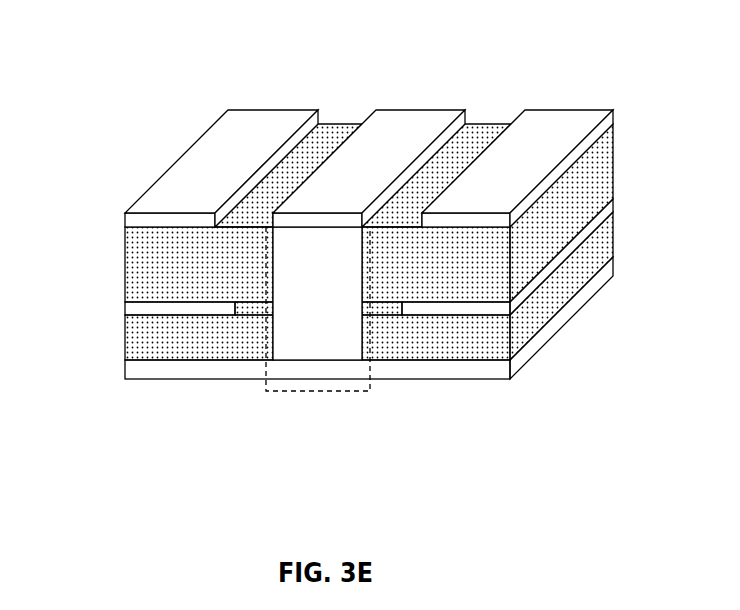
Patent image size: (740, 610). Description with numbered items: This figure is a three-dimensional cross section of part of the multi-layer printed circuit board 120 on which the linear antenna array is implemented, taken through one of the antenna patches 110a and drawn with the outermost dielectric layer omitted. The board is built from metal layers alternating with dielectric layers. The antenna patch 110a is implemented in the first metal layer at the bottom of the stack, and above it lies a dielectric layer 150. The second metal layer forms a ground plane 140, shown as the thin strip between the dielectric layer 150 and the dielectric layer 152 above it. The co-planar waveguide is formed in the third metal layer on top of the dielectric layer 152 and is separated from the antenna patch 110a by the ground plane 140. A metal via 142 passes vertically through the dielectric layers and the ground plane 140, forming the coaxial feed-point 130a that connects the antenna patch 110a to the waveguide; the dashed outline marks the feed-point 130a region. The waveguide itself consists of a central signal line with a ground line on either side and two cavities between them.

The multi-layer printed circuit board 120 is at (320, 280).
The antenna patch 110a is at (428, 380).
The dielectric layer 150 is at (125, 345).
The ground plane 140 is at (447, 313).
The dielectric layer 152 is at (125, 247).
The metal via 142 is at (295, 287).
The coaxial feed-point 130a is at (308, 392).